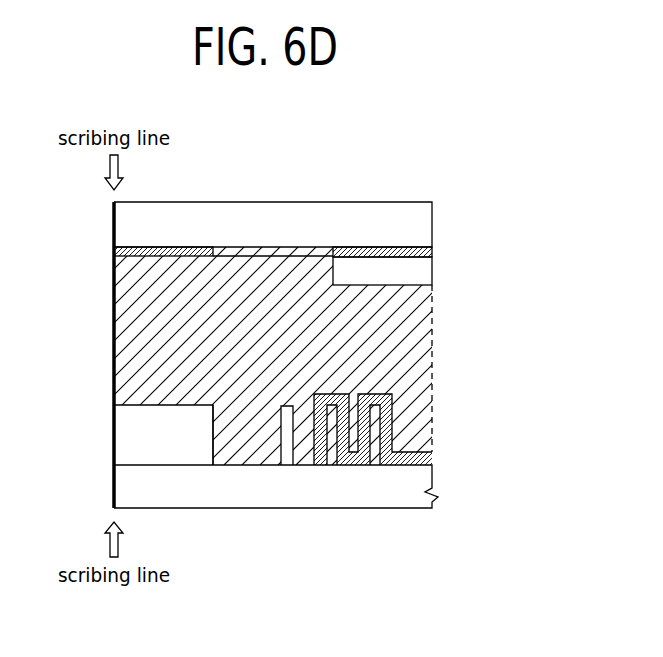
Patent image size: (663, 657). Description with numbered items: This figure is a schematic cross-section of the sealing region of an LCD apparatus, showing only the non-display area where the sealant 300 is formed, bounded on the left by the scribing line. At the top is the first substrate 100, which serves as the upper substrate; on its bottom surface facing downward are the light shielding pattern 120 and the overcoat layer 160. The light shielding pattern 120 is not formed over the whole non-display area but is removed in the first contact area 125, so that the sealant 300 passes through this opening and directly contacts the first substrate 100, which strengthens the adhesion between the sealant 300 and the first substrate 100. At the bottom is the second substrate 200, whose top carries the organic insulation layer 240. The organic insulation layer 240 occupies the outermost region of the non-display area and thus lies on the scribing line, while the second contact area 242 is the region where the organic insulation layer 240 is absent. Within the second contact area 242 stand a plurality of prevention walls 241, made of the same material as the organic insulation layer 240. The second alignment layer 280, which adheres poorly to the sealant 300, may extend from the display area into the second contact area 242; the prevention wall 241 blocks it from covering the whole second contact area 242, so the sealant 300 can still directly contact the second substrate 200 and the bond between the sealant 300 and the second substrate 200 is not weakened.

The first substrate 100 is at (425, 224).
The light shielding pattern 120 is at (425, 251).
The first contact area 125 is at (271, 289).
The overcoat layer 160 is at (425, 277).
The sealant 300 is at (417, 370).
The second alignment layer 280 is at (427, 459).
The second substrate 200 is at (425, 484).
The organic insulation layer 240 is at (133, 438).
The prevention wall 241 is at (287, 443).
The second contact area 242 is at (253, 430).